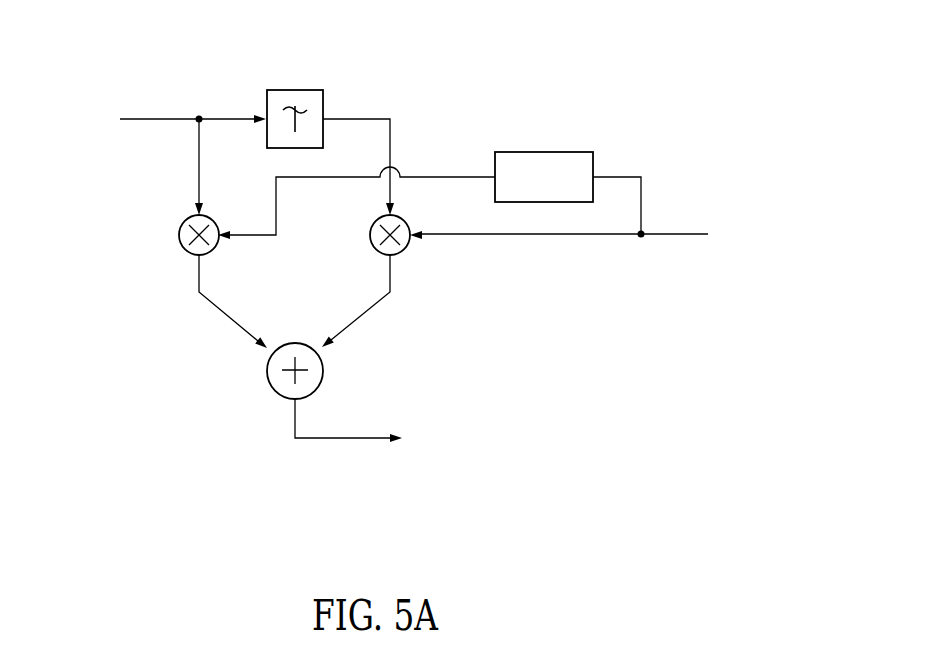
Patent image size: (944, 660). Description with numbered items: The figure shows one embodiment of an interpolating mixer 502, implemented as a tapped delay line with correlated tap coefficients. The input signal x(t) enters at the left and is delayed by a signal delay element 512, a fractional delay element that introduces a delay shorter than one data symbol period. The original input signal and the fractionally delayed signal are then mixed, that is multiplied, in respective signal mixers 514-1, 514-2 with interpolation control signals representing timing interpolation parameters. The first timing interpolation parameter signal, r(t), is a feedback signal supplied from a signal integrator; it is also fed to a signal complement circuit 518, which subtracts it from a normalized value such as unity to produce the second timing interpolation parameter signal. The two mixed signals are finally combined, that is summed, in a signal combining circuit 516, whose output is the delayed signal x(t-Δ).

The interpolating mixer 502 is at (415, 244).
The signal delay element 512 is at (308, 90).
The signal mixer 514-1 is at (180, 228).
The signal mixer 514-2 is at (376, 249).
The signal combining circuit 516 is at (275, 390).
The signal complement circuit 518 is at (574, 152).